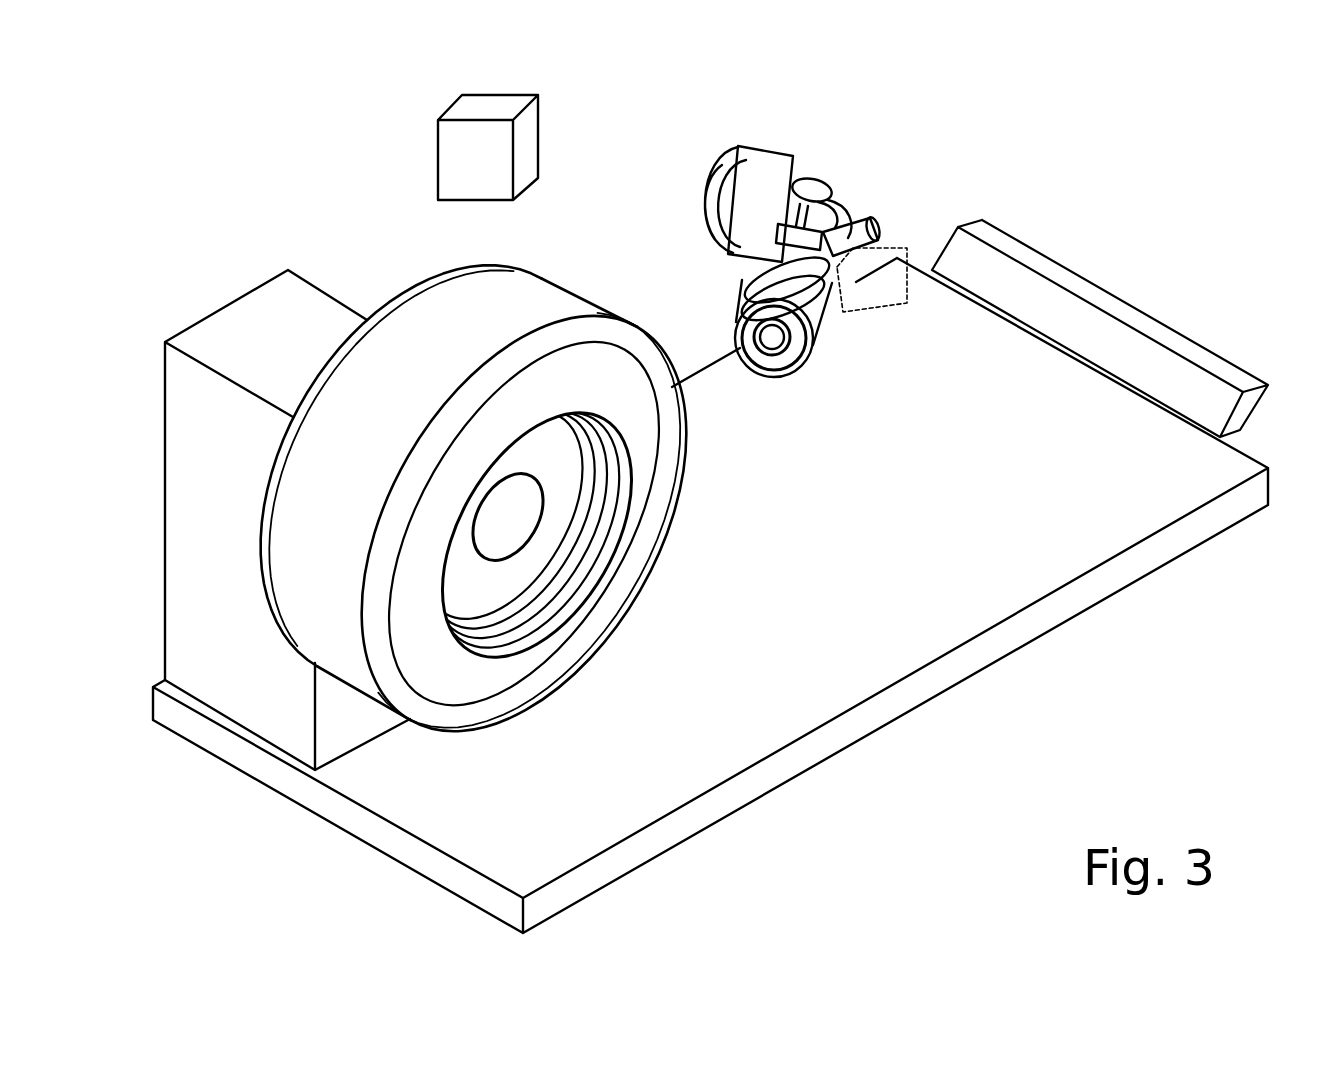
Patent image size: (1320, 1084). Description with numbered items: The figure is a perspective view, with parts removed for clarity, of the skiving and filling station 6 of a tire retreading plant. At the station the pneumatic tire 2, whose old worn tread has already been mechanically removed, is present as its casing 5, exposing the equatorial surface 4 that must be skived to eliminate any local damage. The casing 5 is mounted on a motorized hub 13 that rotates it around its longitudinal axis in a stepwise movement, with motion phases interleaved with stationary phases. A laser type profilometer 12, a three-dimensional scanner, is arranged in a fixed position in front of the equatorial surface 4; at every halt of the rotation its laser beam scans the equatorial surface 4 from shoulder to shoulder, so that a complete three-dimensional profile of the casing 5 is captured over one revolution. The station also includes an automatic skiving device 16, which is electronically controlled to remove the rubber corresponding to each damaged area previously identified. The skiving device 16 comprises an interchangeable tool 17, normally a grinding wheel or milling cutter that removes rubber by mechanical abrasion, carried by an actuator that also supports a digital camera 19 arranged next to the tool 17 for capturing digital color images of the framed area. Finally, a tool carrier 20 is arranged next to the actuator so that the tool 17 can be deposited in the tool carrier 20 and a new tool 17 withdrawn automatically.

The pneumatic tire 2 is at (722, 522).
The equatorial surface 4 is at (333, 642).
The casing 5 is at (492, 688).
The skiving and filling station 6 is at (241, 161).
The laser type profilometer 12 is at (470, 153).
The motorized hub 13 is at (523, 567).
The automatic skiving device 16 is at (936, 141).
The tool 17 is at (767, 343).
The digital camera 19 is at (877, 300).
The tool carrier 20 is at (1115, 310).